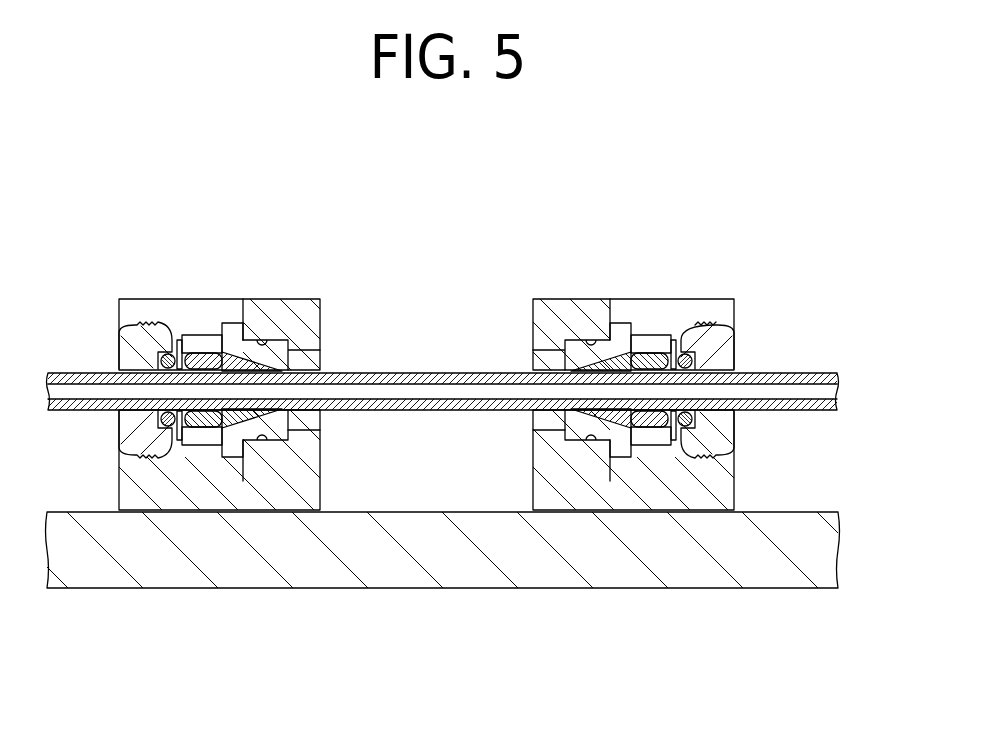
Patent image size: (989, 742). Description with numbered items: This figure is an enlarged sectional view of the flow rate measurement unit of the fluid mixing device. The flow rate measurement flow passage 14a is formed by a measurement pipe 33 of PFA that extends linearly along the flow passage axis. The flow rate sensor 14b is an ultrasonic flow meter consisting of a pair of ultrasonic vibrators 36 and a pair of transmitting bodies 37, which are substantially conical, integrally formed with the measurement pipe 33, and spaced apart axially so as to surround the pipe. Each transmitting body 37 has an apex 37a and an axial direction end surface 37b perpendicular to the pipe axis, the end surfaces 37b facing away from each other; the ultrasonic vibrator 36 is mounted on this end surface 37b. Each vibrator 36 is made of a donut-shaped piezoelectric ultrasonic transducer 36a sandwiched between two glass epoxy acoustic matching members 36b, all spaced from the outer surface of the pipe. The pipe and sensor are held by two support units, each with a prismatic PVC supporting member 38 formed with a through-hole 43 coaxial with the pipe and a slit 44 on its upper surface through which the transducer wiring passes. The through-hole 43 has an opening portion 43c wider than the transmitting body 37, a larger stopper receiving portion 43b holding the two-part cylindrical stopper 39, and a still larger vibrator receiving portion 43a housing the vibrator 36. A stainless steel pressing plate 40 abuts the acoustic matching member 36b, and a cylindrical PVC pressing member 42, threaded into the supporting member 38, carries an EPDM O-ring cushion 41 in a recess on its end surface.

The flow rate measurement flow passage 14a is at (405, 390).
The flow rate sensor 14b is at (656, 308).
The measurement pipe 33 is at (489, 375).
The ultrasonic vibrator 36 is at (248, 665).
The ultrasonic transducer 36a is at (205, 447).
The acoustic matching member 36b is at (182, 447).
The transmitting body 37 is at (272, 437).
The apex 37a is at (292, 415).
The axial direction end surface 37b is at (248, 440).
The supporting member 38 is at (128, 473).
The stopper 39 is at (575, 340).
The pressing plate 40 is at (666, 368).
The cushion 41 is at (703, 342).
The pressing member 42 is at (722, 352).
The through-hole 43 is at (342, 232).
The vibrator receiving portion 43a is at (206, 340).
The stopper receiving portion 43b is at (271, 338).
The opening portion 43c is at (306, 360).
The slit 44 is at (149, 322).